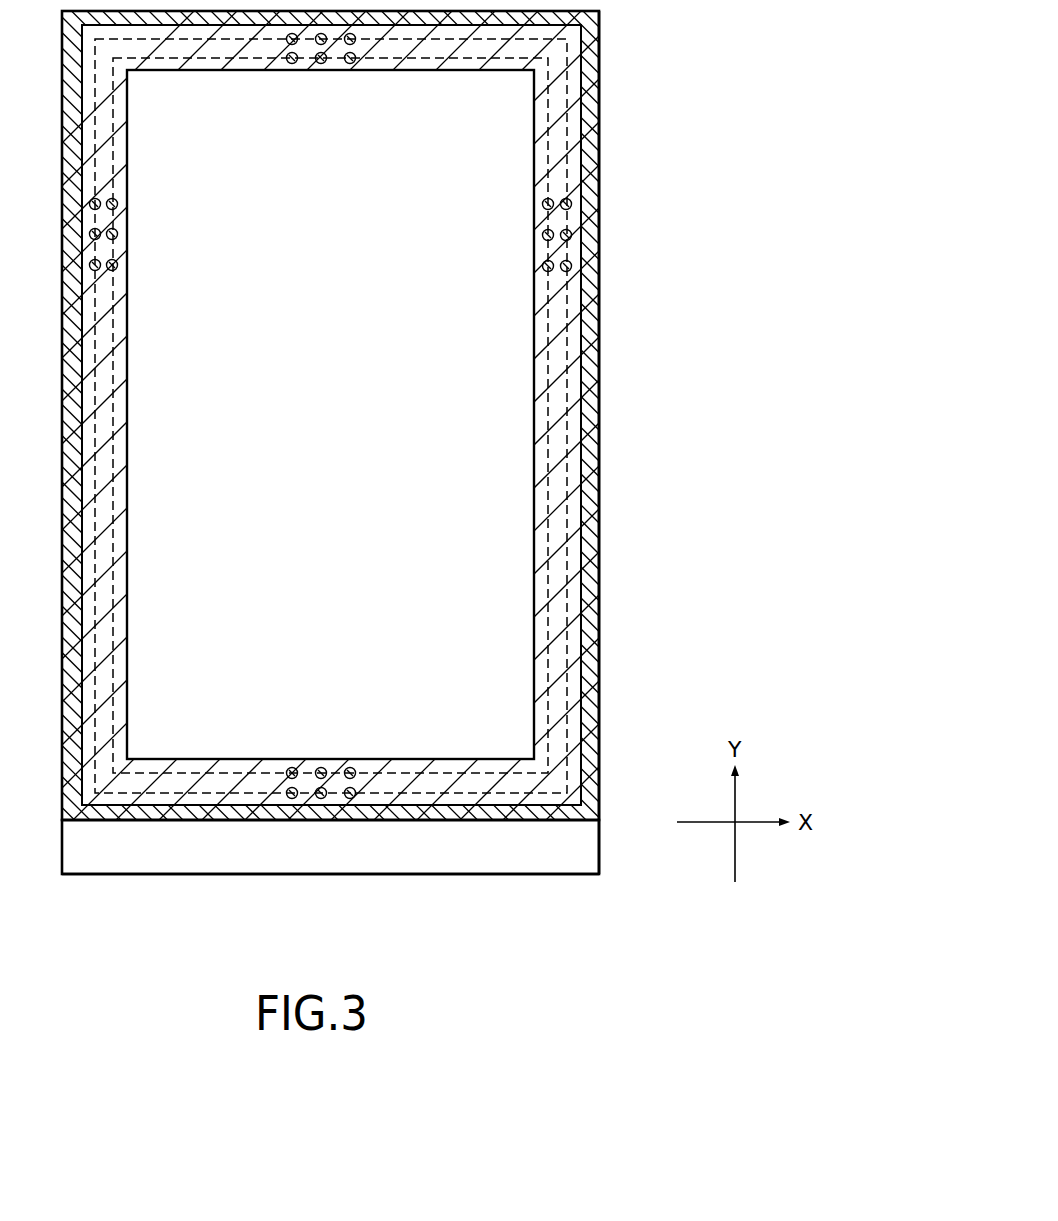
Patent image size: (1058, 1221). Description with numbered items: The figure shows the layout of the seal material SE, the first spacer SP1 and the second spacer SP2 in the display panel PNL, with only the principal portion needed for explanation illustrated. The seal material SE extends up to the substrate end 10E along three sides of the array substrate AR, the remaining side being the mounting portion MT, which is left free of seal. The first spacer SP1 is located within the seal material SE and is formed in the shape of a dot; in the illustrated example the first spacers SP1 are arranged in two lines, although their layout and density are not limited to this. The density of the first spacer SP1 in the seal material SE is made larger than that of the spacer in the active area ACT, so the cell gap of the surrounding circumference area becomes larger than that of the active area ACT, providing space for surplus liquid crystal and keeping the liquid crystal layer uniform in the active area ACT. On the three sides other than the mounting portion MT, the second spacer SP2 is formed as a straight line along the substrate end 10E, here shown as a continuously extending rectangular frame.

The display panel PNL is at (634, 33).
The first spacer SP1 is at (551, 198).
The seal material SE is at (592, 287).
The second spacer SP2 is at (590, 370).
The active area ACT is at (516, 540).
The substrate end 10E is at (612, 684).
The array substrate AR is at (475, 866).
The mounting portion MT is at (571, 860).